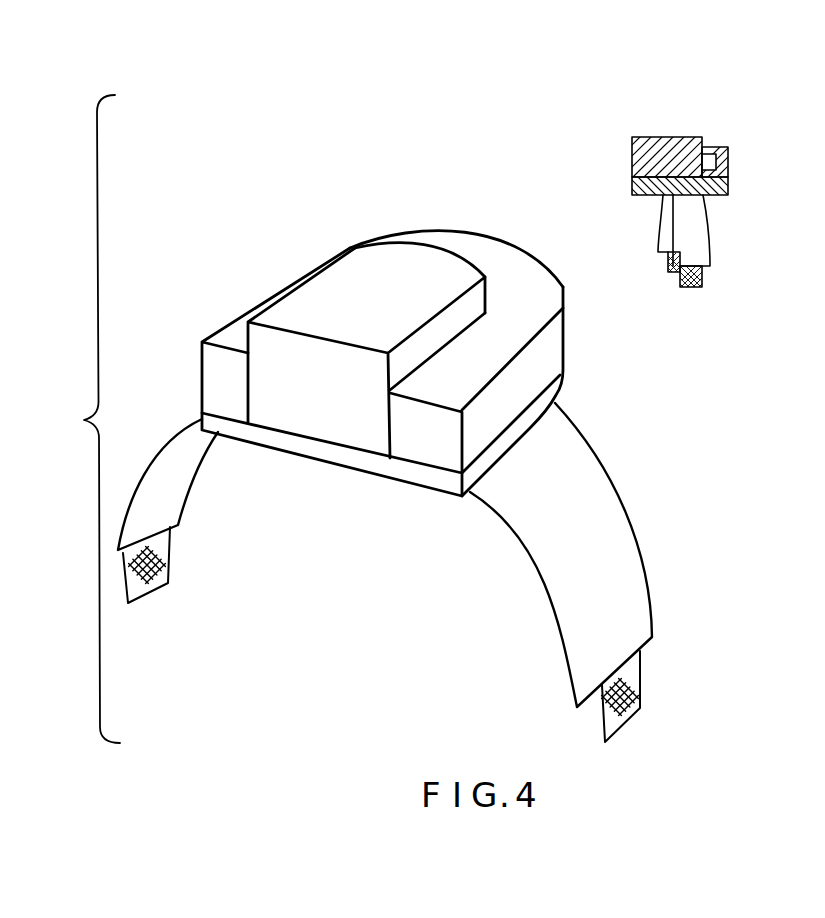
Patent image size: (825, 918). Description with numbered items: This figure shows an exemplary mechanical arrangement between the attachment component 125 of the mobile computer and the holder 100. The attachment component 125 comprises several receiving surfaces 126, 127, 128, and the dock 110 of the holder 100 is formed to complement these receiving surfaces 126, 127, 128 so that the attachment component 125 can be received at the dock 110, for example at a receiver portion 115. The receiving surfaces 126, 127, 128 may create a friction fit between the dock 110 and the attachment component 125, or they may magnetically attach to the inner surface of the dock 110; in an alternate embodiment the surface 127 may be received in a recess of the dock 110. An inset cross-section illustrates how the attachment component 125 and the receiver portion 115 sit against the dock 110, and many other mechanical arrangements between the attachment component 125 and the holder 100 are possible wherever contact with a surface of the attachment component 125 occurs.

The holder 100 is at (657, 501).
The dock 110 is at (540, 385).
The receiver portion 115 is at (633, 168).
The attachment component 125 is at (343, 290).
The receiving surface 126 is at (453, 342).
The receiving surface 127 is at (460, 257).
The receiving surface 128 is at (278, 298).